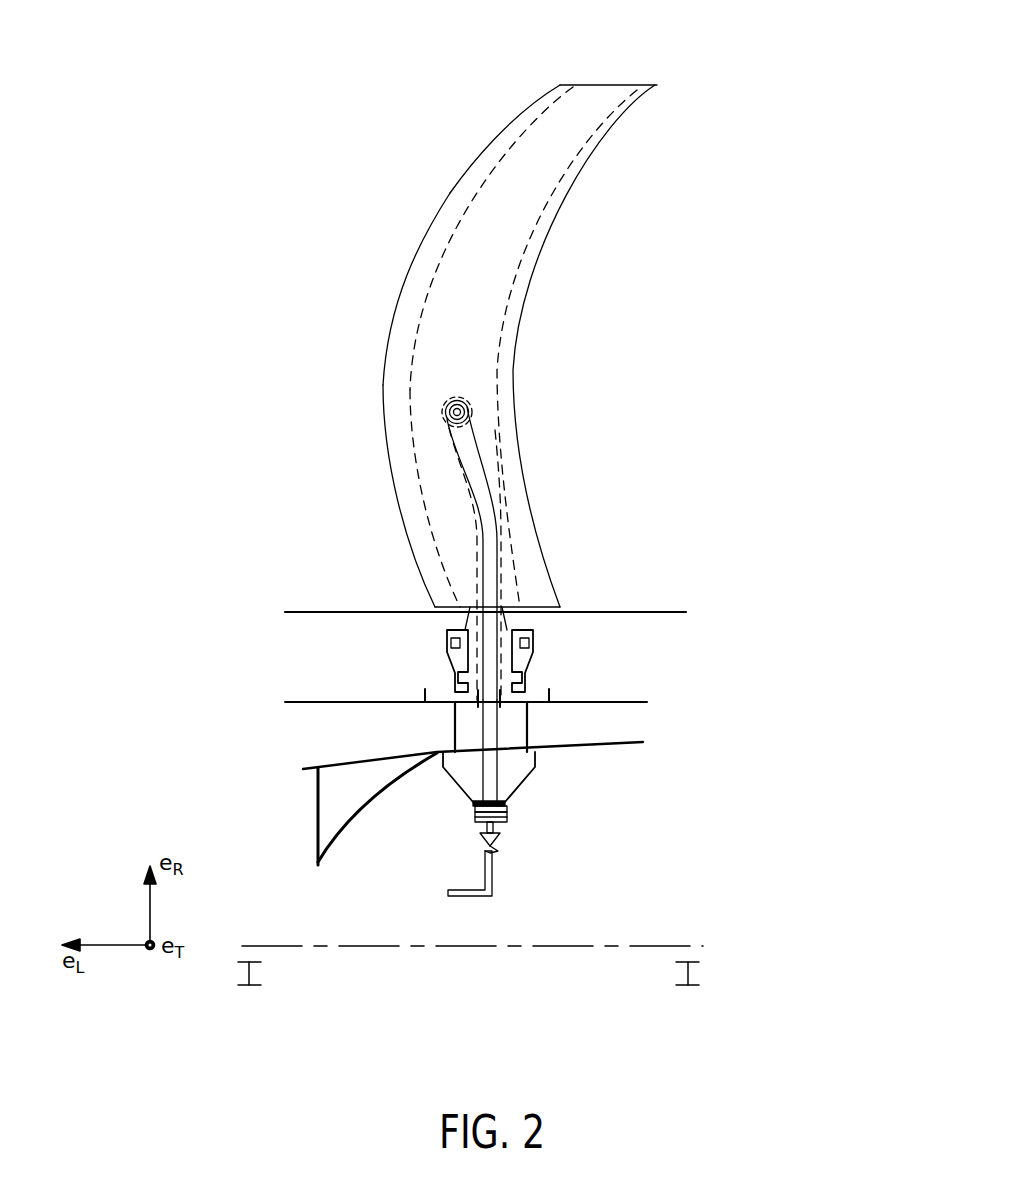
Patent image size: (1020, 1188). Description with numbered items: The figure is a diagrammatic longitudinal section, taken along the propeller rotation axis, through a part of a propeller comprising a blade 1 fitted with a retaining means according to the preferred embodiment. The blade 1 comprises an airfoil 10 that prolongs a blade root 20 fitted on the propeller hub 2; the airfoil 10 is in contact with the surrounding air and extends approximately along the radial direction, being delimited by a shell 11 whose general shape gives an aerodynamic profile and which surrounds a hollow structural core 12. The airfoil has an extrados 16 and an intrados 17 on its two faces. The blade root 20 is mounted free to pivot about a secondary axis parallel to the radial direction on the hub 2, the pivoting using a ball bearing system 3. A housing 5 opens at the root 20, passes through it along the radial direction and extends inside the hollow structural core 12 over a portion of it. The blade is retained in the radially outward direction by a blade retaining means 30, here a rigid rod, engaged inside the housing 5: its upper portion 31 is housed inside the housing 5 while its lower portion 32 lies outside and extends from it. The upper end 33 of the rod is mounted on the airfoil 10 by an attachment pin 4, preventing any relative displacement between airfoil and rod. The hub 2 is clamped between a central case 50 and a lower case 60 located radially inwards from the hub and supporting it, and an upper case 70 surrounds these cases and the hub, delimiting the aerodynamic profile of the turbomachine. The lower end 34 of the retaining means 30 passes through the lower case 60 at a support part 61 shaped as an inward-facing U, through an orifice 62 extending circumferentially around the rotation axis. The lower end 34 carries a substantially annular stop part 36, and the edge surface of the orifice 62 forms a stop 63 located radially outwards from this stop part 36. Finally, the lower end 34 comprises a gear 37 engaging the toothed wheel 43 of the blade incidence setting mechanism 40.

The blade 1 is at (285, 205).
The propeller hub 2 is at (455, 723).
The ball bearing system 3 is at (448, 640).
The attachment pin 4 is at (446, 418).
The housing 5 is at (473, 563).
The airfoil 10 is at (598, 193).
The shell 11 is at (448, 193).
The hollow structural core 12 is at (508, 148).
The extrados 16 is at (395, 367).
The intrados 17 is at (393, 313).
The blade root 20 is at (507, 658).
The blade retaining means 30 is at (481, 532).
The upper portion 31 is at (492, 533).
The lower portion 32 is at (492, 737).
The upper end 33 is at (470, 403).
The lower end 34 is at (497, 828).
The stop part 36 is at (476, 814).
The gear 37 is at (499, 841).
The blade incidence setting mechanism 40 is at (497, 886).
The toothed wheel 43 is at (481, 838).
The central case 50 is at (628, 700).
The lower case 60 is at (645, 742).
The support part 61 is at (530, 783).
The orifice 62 is at (459, 805).
The stop 63 is at (505, 806).
The upper case 70 is at (657, 611).